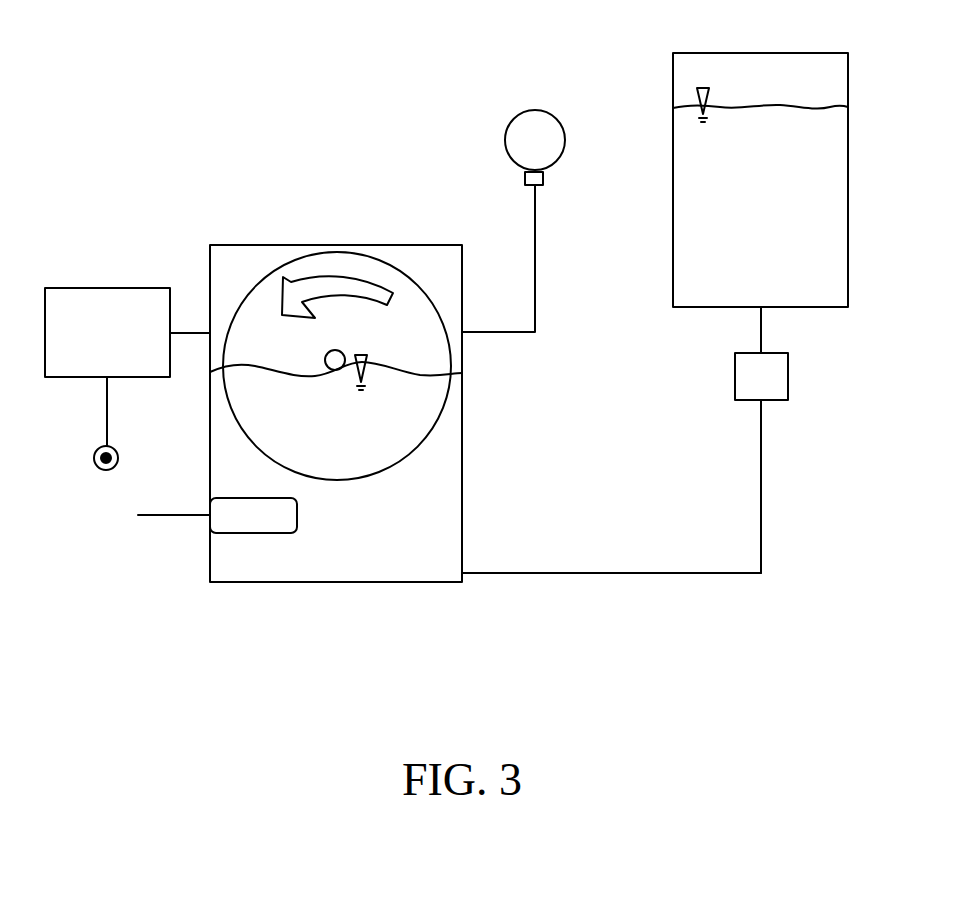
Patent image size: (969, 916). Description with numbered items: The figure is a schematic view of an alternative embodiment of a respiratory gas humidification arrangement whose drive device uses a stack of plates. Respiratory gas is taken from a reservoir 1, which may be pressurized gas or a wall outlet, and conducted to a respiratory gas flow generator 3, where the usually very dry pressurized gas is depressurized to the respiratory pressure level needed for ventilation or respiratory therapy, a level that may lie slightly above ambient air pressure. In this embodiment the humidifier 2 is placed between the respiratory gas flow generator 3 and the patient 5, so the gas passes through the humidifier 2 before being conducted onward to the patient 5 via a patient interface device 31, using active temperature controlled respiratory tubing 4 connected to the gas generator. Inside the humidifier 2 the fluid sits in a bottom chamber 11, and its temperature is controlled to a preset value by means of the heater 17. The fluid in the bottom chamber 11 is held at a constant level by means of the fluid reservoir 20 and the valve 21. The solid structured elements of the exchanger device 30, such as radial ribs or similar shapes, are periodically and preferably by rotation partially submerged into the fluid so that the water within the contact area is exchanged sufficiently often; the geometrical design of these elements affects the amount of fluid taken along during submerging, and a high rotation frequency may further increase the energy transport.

The reservoir 1 is at (96, 451).
The humidifier 2 is at (210, 262).
The respiratory gas flow generator 3 is at (108, 288).
The active temperature controlled respiratory tubing 4 is at (537, 245).
The patient 5 is at (559, 119).
The bottom chamber 11 is at (345, 558).
The heater 17 is at (240, 517).
The fluid reservoir 20 is at (836, 170).
The valve 21 is at (788, 375).
The exchanger device 30 is at (307, 262).
The patient interface device 31 is at (525, 178).